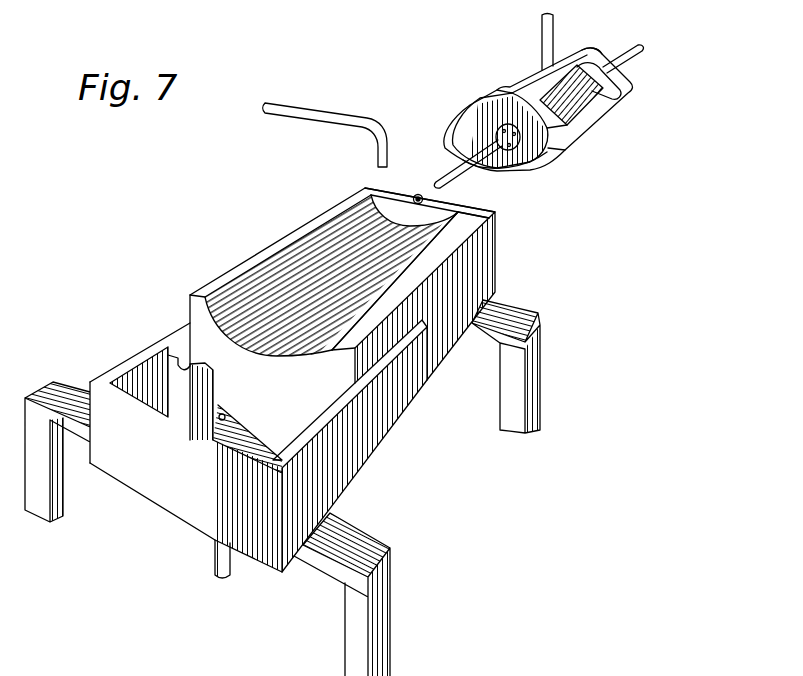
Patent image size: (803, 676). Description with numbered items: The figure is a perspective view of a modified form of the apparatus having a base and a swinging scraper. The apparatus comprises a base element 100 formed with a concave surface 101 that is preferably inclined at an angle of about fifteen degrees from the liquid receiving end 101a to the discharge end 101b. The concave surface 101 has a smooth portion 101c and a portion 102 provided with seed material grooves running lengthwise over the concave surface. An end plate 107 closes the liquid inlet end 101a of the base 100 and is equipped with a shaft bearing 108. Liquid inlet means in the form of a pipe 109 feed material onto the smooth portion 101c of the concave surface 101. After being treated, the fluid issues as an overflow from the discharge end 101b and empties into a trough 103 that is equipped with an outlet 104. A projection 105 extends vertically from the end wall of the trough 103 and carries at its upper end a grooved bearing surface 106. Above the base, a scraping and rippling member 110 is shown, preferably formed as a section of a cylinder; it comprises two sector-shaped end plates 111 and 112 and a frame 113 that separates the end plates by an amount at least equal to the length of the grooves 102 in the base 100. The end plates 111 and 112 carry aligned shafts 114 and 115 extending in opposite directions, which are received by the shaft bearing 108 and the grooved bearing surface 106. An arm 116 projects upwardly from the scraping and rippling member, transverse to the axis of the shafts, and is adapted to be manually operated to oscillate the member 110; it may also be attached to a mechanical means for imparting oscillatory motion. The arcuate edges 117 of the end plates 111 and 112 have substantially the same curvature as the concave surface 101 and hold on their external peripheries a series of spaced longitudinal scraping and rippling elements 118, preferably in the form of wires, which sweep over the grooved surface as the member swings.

The base element 100 is at (463, 285).
The concave surface 101 is at (282, 273).
The liquid receiving end 101a is at (458, 200).
The discharge end 101b is at (188, 320).
The smooth portion 101c is at (443, 232).
The grooved portion 102 is at (427, 262).
The trough 103 is at (277, 445).
The outlet 104 is at (213, 551).
The projection 105 is at (190, 407).
The grooved bearing surface 106 is at (185, 370).
The end plate 107 is at (380, 190).
The shaft bearing 108 is at (417, 193).
The pipe 109 is at (300, 106).
The scraping and rippling member 110 is at (583, 47).
The sector-shaped end plate 111 is at (607, 97).
The sector-shaped end plate 112 is at (563, 147).
The frame 113 is at (512, 82).
The shaft 114 is at (632, 45).
The shaft 115 is at (480, 133).
The arm 116 is at (542, 36).
The arcuate edge 117 is at (617, 90).
The scraping and rippling element 118 is at (600, 118).